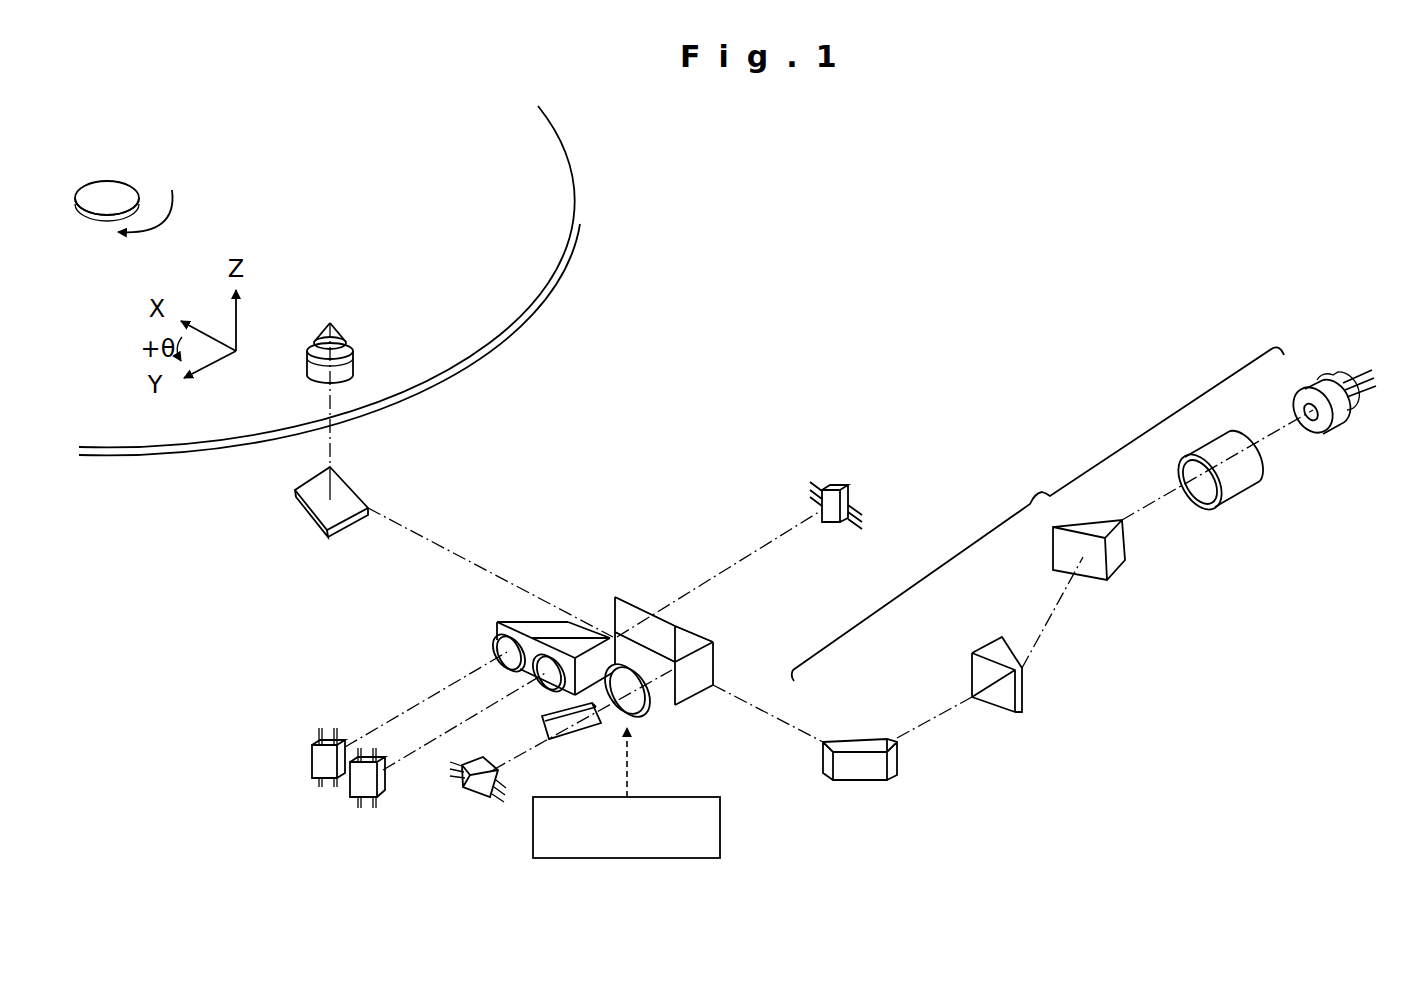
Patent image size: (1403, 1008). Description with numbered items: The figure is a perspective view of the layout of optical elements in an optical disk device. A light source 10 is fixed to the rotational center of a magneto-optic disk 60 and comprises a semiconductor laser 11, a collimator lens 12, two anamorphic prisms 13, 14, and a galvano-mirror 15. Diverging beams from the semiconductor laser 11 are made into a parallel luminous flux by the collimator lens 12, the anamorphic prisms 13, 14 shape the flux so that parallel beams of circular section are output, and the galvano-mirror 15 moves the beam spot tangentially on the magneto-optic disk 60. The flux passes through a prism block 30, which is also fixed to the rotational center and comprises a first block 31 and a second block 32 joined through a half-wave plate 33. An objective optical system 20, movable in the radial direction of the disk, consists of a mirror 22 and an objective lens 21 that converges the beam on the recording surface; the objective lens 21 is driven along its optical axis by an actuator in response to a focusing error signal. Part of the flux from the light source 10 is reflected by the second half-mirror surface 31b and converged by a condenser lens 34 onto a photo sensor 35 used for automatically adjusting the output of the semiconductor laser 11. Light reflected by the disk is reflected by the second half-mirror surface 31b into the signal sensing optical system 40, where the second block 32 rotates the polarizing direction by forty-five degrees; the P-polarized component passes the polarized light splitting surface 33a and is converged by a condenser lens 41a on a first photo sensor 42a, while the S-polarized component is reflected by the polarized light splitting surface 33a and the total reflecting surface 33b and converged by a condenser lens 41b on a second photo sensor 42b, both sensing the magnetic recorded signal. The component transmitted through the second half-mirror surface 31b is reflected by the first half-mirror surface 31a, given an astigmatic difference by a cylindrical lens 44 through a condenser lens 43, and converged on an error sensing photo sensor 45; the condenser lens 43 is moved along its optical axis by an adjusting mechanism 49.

The light source 10 is at (1084, 587).
The semiconductor laser 11 is at (1333, 420).
The collimator lens 12 is at (1245, 478).
The anamorphic prism 13 is at (1095, 575).
The anamorphic prism 14 is at (1020, 710).
The galvano-mirror 15 is at (865, 773).
The objective optical system 20 is at (415, 424).
The objective lens 21 is at (337, 371).
The mirror 22 is at (340, 493).
The prism block 30 is at (620, 586).
The first block 31 is at (690, 615).
The first half-mirror surface 31a is at (688, 628).
The second half-mirror surface 31b is at (690, 583).
The second block 32 is at (595, 622).
The λ/2-plate 33 is at (529, 607).
The polarized light splitting surface 33a is at (558, 636).
The total reflecting surface 33b is at (511, 618).
The condenser lens 34 is at (640, 610).
The photo sensor 35 is at (838, 490).
The signal sensing optical system 40 is at (365, 700).
The condenser lens 41a is at (520, 674).
The condenser lens 41b is at (494, 648).
The first photo sensor 42a is at (358, 785).
The second photo sensor 42b is at (317, 758).
The condenser lens 43 is at (635, 718).
The cylindrical lens 44 is at (585, 737).
The error sensing photo sensor 45 is at (478, 783).
The adjusting mechanism 49 is at (720, 823).
The magneto-optic disk 60 is at (500, 292).